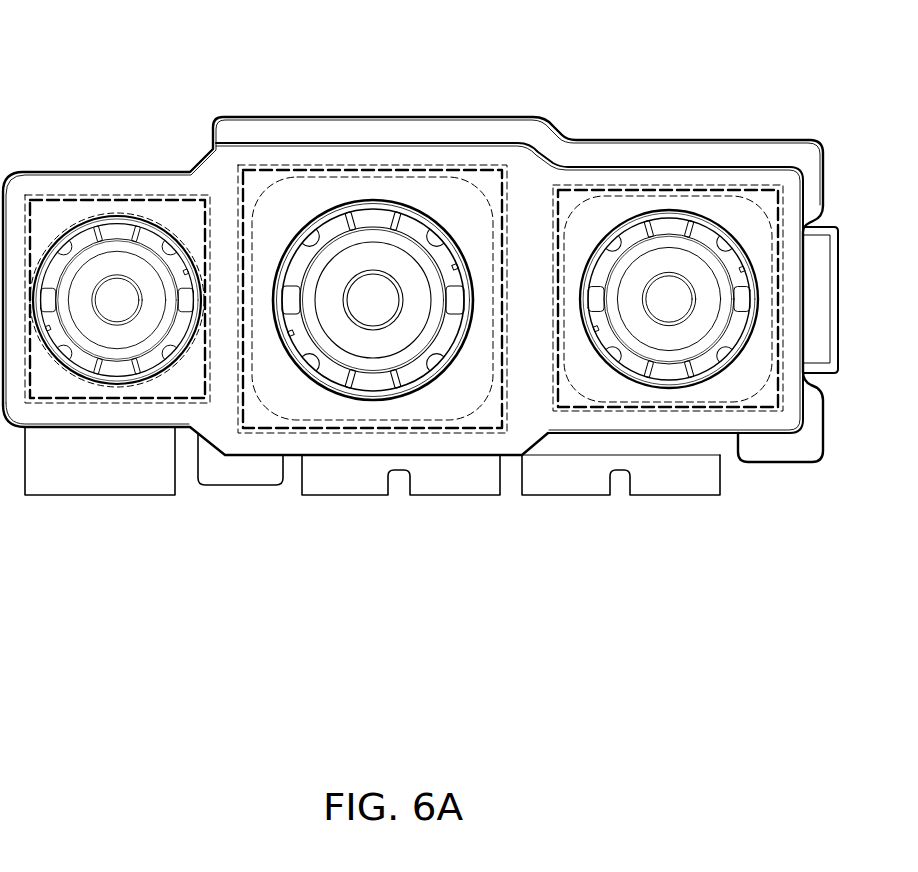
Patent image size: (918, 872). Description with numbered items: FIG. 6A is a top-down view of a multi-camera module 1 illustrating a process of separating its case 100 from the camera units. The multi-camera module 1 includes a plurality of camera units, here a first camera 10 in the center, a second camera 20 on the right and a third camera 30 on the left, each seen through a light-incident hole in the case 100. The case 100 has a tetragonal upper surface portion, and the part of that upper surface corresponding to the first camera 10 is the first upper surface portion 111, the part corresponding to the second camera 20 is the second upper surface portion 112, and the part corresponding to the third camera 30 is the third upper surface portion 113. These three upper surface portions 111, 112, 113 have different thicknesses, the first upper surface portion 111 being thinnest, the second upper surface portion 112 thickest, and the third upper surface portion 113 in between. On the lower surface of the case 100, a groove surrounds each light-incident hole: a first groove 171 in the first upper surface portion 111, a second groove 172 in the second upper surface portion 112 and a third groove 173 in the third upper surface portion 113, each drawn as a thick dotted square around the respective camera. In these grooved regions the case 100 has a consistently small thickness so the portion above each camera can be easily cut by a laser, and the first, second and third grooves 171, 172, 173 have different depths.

The multi-camera module 1 is at (80, 36).
The case 100 is at (527, 428).
The first camera 10 is at (372, 370).
The second camera 20 is at (668, 367).
The third camera 30 is at (116, 366).
The first upper surface portion 111 is at (293, 197).
The second upper surface portion 112 is at (612, 210).
The third upper surface portion 113 is at (60, 238).
The first groove 171 is at (480, 178).
The second groove 172 is at (570, 200).
The third groove 173 is at (177, 217).